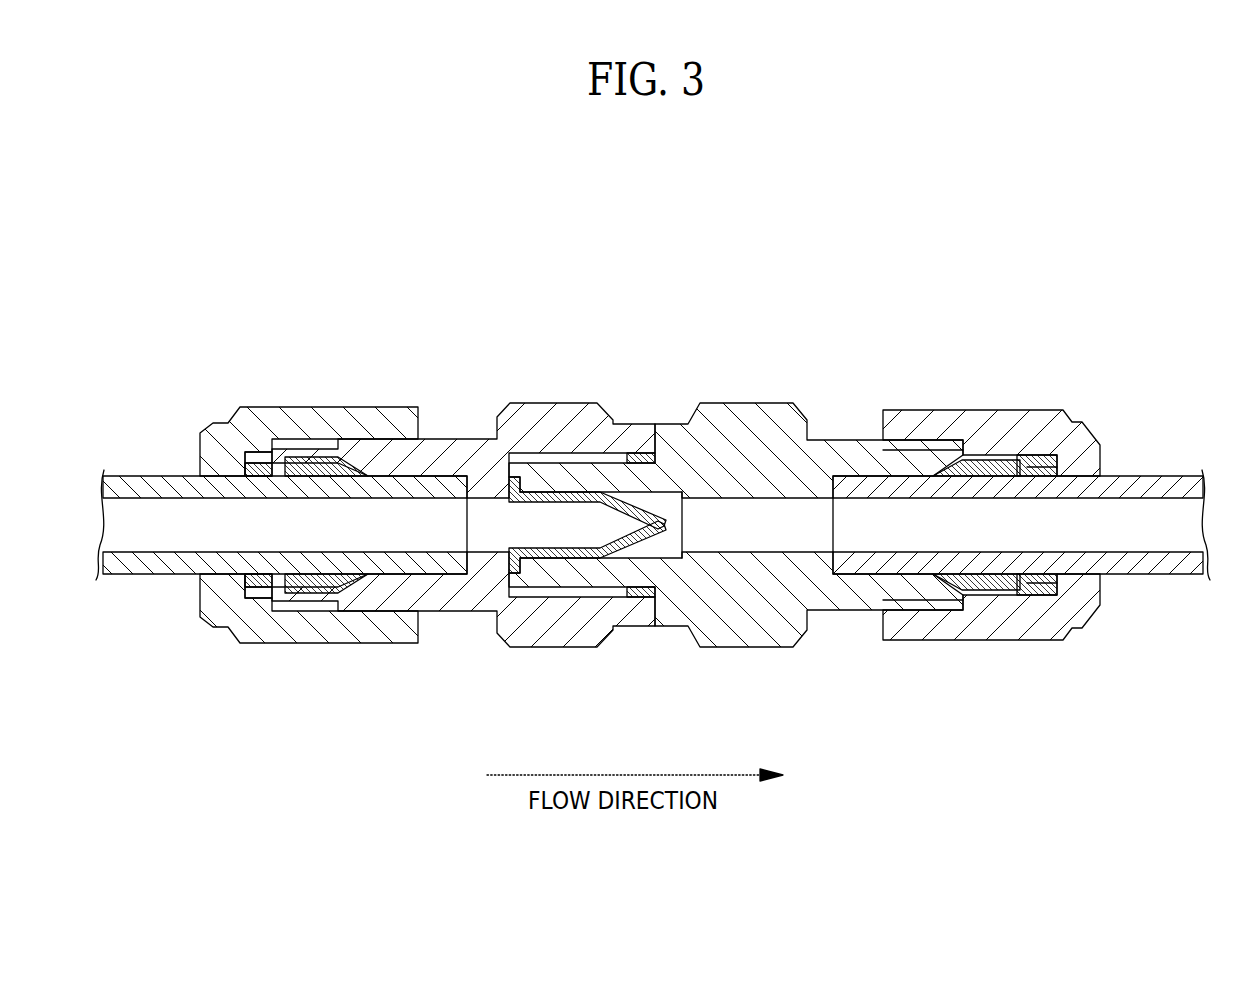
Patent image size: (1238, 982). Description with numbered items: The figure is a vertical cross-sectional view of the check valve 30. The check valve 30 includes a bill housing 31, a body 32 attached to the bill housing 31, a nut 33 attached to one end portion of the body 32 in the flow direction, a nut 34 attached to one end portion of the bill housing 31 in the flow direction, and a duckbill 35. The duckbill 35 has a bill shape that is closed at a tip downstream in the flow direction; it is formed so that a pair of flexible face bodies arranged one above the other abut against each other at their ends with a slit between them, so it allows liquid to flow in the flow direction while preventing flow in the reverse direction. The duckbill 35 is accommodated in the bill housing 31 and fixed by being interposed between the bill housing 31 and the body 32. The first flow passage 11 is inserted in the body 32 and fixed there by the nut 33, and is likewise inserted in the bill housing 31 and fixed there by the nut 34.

The first flow passage 11 is at (140, 476).
The check valve 30 is at (650, 414).
The bill housing 31 is at (741, 403).
The body 32 is at (565, 403).
The nut 33 is at (304, 406).
The nut 34 is at (963, 410).
The duckbill 35 is at (652, 541).